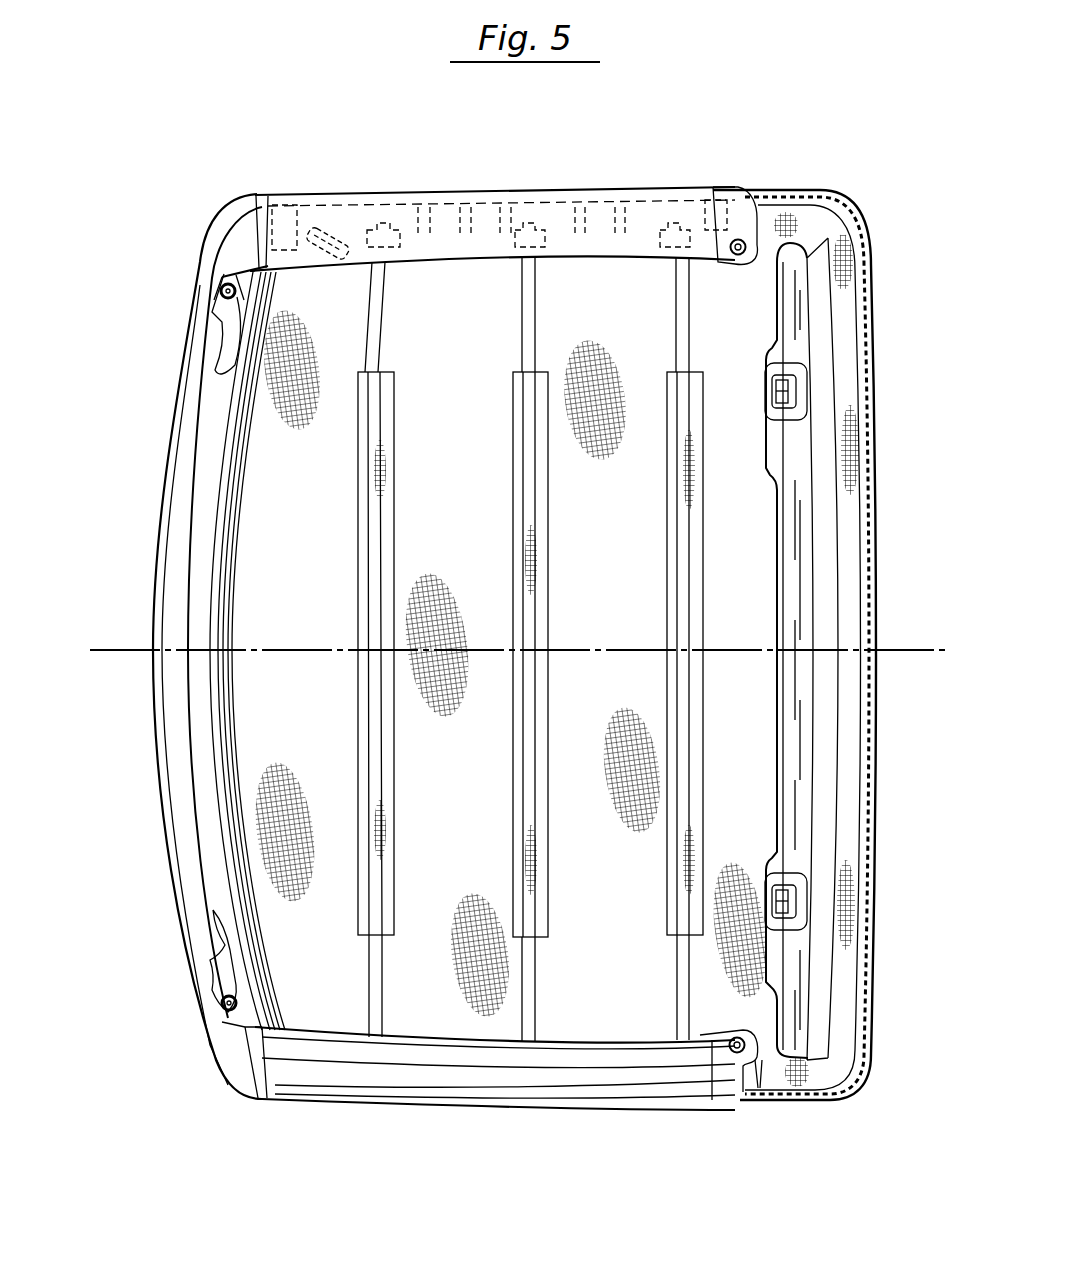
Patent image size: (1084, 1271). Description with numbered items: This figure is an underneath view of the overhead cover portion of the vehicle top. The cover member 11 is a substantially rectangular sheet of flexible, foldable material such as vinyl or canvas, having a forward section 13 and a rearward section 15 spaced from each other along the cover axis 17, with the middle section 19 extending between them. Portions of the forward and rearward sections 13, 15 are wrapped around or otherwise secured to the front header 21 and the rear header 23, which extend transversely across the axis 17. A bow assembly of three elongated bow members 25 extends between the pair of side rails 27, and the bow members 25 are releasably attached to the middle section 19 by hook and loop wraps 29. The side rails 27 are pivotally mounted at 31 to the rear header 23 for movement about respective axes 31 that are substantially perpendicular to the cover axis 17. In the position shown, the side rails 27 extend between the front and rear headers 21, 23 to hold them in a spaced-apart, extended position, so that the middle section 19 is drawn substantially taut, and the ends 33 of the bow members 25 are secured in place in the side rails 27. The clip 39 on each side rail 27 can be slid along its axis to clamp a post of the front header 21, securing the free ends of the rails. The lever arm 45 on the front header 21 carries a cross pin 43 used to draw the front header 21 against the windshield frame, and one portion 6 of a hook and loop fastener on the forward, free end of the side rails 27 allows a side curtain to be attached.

The hook and loop fastener portion 6 is at (245, 1058).
The cover member 11 is at (750, 182).
The forward section 13 is at (172, 520).
The rearward section 15 is at (848, 530).
The axis 17 is at (897, 650).
The middle section 19 is at (456, 533).
The front header 21 is at (210, 600).
The rear header 23 is at (803, 606).
The bow members 25 is at (386, 318).
The side rails 27 is at (498, 190).
The hook and loop wraps 29 is at (372, 410).
The pivot axes 31 is at (710, 235).
The ends of the bow members 33 is at (560, 205).
The clip 39 is at (332, 230).
The cross pin 43 is at (232, 274).
The lever arm 45 is at (222, 348).